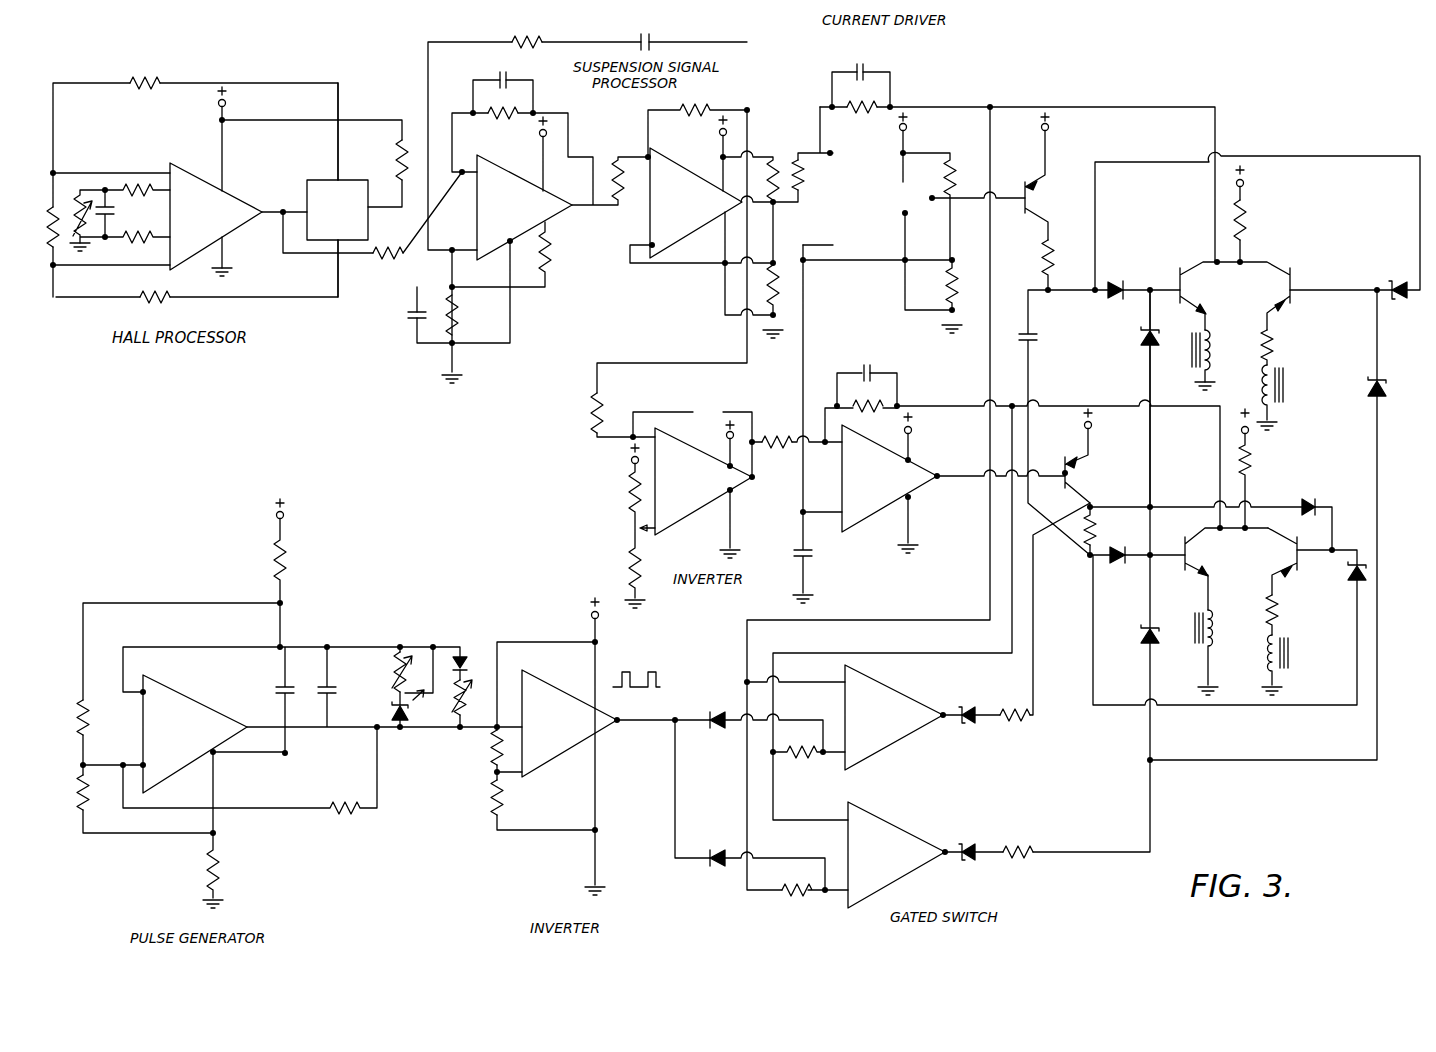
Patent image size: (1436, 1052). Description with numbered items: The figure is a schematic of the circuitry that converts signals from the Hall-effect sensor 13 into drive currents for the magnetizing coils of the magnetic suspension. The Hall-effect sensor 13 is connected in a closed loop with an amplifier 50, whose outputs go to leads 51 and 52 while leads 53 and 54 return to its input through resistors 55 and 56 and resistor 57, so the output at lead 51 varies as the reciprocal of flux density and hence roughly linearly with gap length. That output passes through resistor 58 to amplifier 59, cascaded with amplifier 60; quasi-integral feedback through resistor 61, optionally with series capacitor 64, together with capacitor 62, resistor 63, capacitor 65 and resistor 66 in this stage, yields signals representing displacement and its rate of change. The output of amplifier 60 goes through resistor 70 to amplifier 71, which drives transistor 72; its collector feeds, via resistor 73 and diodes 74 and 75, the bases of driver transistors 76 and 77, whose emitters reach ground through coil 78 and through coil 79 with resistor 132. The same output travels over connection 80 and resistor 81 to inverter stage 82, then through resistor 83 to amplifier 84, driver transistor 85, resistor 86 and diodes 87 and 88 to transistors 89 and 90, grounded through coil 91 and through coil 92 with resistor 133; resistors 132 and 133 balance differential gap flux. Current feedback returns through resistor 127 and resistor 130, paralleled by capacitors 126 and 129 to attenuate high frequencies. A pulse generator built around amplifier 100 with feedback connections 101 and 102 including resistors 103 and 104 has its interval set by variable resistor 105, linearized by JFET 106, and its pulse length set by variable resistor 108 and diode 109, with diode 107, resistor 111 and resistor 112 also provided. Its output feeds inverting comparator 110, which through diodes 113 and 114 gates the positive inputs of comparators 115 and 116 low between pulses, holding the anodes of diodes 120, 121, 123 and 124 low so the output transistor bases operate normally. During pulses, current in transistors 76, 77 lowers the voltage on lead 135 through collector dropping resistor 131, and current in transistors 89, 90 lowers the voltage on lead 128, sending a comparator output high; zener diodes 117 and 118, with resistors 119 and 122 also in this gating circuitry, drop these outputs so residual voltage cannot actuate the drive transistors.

The Hall-effect sensor 13 is at (318, 180).
The amplifier 50 is at (190, 165).
The lead 51 is at (268, 215).
The lead 52 is at (390, 199).
The lead 53 is at (340, 97).
The lead 54 is at (340, 272).
The resistor 55 is at (143, 83).
The resistor 56 is at (160, 297).
The resistor 57 is at (56, 205).
The resistor 58 is at (380, 252).
The amplifier 59 is at (515, 172).
The amplifier 60 is at (674, 160).
The resistor 61 is at (533, 42).
The capacitor 62 is at (412, 317).
The resistor 63 is at (458, 318).
The capacitor 64 is at (652, 38).
The capacitor 65 is at (503, 72).
The resistor 66 is at (508, 118).
The resistor 70 is at (797, 165).
The amplifier 71 is at (833, 205).
The driver transistor 72 is at (1022, 187).
The resistor 73 is at (1042, 248).
The diode 74 is at (1115, 280).
The diode 75 is at (1400, 280).
The driver transistor 76 is at (1180, 275).
The driver transistor 77 is at (1292, 274).
The coil 78 is at (1210, 352).
The coil 79 is at (1262, 392).
The connection 80 is at (752, 350).
The resistor 81 is at (597, 408).
The inverter stage 82 is at (705, 450).
The resistor 83 is at (780, 440).
The amplifier 84 is at (892, 450).
The driver transistor 85 is at (1060, 466).
The resistor 86 is at (1095, 535).
The diode 87 is at (1118, 560).
The diode 88 is at (1365, 582).
The driver transistor 89 is at (1180, 553).
The driver transistor 90 is at (1298, 547).
The coil 91 is at (1218, 638).
The coil 92 is at (1270, 648).
The amplifier 100 is at (200, 712).
The feedback connection 101 is at (83, 672).
The feedback connection 102 is at (177, 835).
The resistor 103 is at (85, 710).
The resistor 104 is at (85, 800).
The variable resistor 105 is at (400, 664).
The JFET 106 is at (420, 700).
The diode 107 is at (398, 713).
The variable resistor 108 is at (475, 680).
The diode 109 is at (470, 665).
The inverting comparator 110 is at (560, 690).
The resistor 111 is at (492, 740).
The resistor 112 is at (492, 790).
The diode 113 is at (710, 710).
The diode 114 is at (725, 848).
The comparator 115 is at (890, 683).
The comparator 116 is at (900, 828).
The zener diode 117 is at (972, 705).
The zener diode 118 is at (975, 860).
The resistor 119 is at (1000, 718).
The diode 120 is at (1138, 335).
The diode 121 is at (1308, 500).
The resistor 122 is at (1030, 850).
The diode 123 is at (1143, 632).
The diode 124 is at (1385, 392).
The capacitor 126 is at (865, 56).
The resistor 127 is at (866, 115).
The lead 128 is at (1010, 610).
The capacitor 129 is at (868, 368).
The resistor 130 is at (882, 403).
The collector voltage dropping resistor 131 is at (1248, 225).
The resistor 132 is at (1285, 333).
The resistor 133 is at (1280, 608).
The lead 135 is at (992, 562).